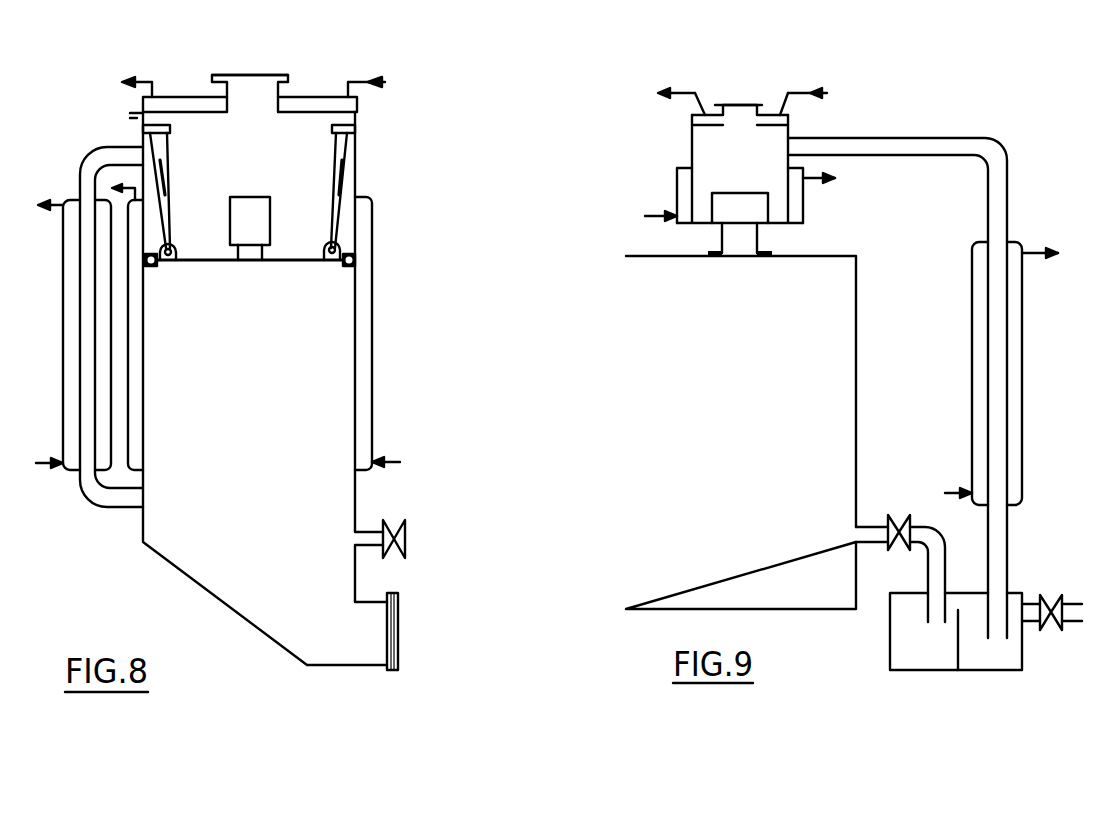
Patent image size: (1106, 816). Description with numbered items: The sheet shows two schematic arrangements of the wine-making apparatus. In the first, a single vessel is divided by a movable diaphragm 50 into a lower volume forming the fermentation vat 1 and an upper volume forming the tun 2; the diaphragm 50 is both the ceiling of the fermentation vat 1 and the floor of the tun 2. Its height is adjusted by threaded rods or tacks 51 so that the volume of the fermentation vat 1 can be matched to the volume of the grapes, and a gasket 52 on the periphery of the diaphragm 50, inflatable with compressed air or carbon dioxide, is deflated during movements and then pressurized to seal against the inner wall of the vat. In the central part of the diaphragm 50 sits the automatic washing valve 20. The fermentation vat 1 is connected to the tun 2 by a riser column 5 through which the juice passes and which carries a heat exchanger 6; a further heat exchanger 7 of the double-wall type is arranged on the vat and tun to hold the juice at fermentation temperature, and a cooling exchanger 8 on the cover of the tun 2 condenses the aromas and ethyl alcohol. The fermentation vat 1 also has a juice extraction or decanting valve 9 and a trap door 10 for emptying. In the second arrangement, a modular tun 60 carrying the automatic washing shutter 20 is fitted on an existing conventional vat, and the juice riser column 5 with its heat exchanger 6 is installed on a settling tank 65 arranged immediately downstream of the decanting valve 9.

In FIG. 8, the fermentation vat 1 is at (357, 505).
In FIG. 9, the fermentation vat 1 is at (625, 374).
In FIG. 8, the tun 2 is at (357, 176).
In FIG. 8, the riser column 5 is at (93, 503).
In FIG. 9, the riser column 5 is at (997, 150).
In FIG. 8, the heat exchanger 6 is at (70, 312).
In FIG. 9, the heat exchanger 6 is at (1023, 392).
In FIG. 8, the heat exchanger 7 is at (370, 368).
In FIG. 9, the heat exchanger 7 is at (677, 182).
In FIG. 8, the cooling exchanger 8 is at (313, 97).
In FIG. 9, the cooling exchanger 8 is at (773, 115).
In FIG. 8, the juice extraction valve 9 is at (395, 556).
In FIG. 9, the juice extraction valve 9 is at (898, 515).
In FIG. 8, the trap door 10 is at (398, 643).
In FIG. 8, the automatic washing valve 20 is at (258, 223).
In FIG. 9, the automatic washing valve 20 is at (734, 202).
In FIG. 8, the movable diaphragm 50 is at (207, 264).
In FIG. 8, the threaded rods 51 is at (332, 170).
In FIG. 8, the inflatable gasket 52 is at (153, 268).
In FIG. 9, the tun 60 is at (690, 140).
In FIG. 9, the settling tank 65 is at (988, 663).